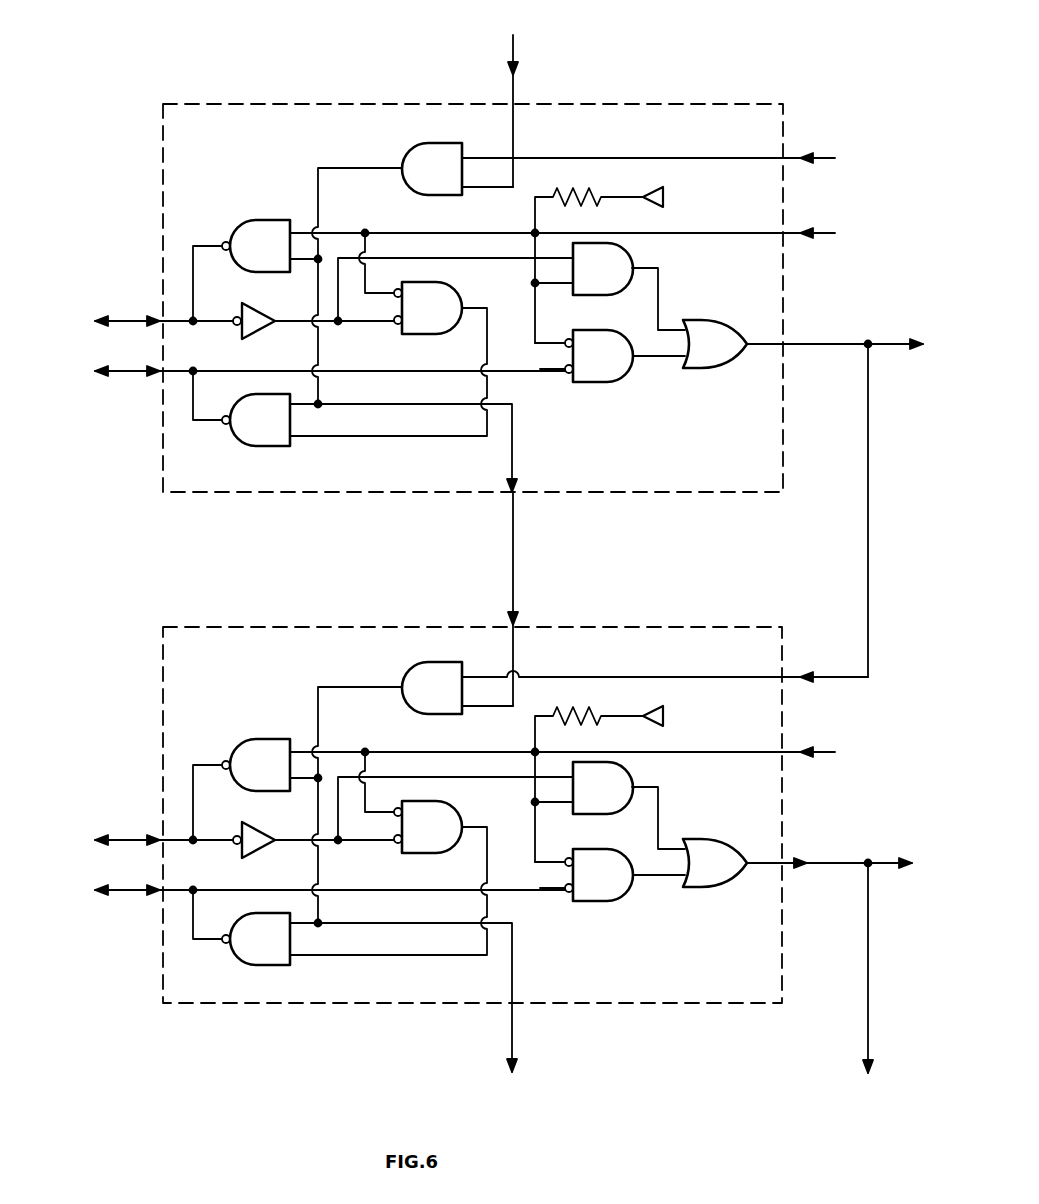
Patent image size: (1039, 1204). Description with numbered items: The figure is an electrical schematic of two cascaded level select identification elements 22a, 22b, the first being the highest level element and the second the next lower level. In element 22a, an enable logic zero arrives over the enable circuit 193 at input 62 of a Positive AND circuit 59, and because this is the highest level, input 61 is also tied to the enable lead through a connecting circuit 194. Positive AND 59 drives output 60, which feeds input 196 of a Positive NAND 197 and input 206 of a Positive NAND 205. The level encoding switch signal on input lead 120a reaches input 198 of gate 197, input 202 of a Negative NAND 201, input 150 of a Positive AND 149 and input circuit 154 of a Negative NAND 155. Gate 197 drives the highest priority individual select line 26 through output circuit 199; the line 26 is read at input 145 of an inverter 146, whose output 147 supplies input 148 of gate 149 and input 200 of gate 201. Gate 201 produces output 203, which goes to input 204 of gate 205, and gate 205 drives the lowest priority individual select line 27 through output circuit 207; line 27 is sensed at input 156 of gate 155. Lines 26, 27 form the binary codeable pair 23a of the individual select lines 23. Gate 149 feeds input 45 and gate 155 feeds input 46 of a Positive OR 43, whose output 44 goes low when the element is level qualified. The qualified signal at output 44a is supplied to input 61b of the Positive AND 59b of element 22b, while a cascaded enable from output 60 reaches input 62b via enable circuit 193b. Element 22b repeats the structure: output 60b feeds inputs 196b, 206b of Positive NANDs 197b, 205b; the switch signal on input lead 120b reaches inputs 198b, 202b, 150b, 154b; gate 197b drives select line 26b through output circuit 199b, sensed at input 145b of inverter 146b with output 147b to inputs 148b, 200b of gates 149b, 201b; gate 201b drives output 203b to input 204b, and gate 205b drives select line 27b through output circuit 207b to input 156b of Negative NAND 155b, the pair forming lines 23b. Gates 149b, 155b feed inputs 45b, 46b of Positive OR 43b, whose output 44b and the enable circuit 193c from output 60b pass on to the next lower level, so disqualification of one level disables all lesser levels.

The level select identification element 22a is at (846, 47).
The level select identification element 22b is at (507, 787).
The enable circuit 193 is at (513, 97).
The enable circuit 193b is at (527, 599).
The enable circuit 193c is at (551, 1048).
The connecting circuit 194 is at (815, 158).
The input lead 120a is at (832, 233).
The input lead 120b is at (850, 737).
The Positive AND circuit 59 is at (432, 169).
The Positive AND circuit 59b is at (432, 688).
The output 60 is at (386, 168).
The output 60b is at (357, 787).
The input 61 is at (488, 150).
The input 61b is at (665, 659).
The input 62 is at (490, 190).
The input 62b is at (488, 724).
The Positive NAND circuit 197 is at (256, 246).
The Positive NAND circuit 197b is at (256, 765).
The input 198 is at (305, 233).
The input 198b is at (525, 735).
The input 196 is at (305, 262).
The input 196b is at (288, 799).
The output circuit 199 is at (207, 246).
The output circuit 199b is at (208, 767).
The inverter 146 is at (256, 304).
The inverter 146b is at (235, 822).
The input 145 is at (222, 325).
The input 145b is at (201, 858).
The output 147 is at (299, 325).
The output 147b is at (299, 858).
The Negative NAND circuit 201 is at (428, 308).
The Negative NAND circuit 201b is at (428, 827).
The input 200 is at (357, 325).
The input 200b is at (455, 829).
The input 202 is at (380, 292).
The input 202b is at (416, 782).
The output 203 is at (482, 292).
The output 203b is at (388, 891).
The Positive NAND circuit 205 is at (256, 420).
The Positive NAND circuit 205b is at (256, 939).
The input 206 is at (312, 407).
The input 206b is at (403, 997).
The input 204 is at (300, 440).
The input 204b is at (331, 973).
The output circuit 207 is at (200, 425).
The output circuit 207b is at (229, 945).
The input 148 is at (553, 255).
The input 148b is at (622, 784).
The Positive AND circuit 149 is at (603, 269).
The Positive AND circuit 149b is at (603, 788).
The input 150 is at (556, 290).
The input 150b is at (583, 818).
The Negative NAND gate 155 is at (599, 356).
The Negative NAND circuit 155b is at (599, 875).
The input circuit 154 is at (554, 340).
The input 154b is at (529, 864).
The input 156 is at (560, 370).
The input 156b is at (570, 913).
The Positive OR circuit 43 is at (715, 344).
The Positive OR circuit 43b is at (715, 863).
The input 45 is at (673, 324).
The input 45b is at (683, 818).
The input 46 is at (648, 357).
The input 46b is at (669, 902).
The output 44 is at (759, 360).
The output 44a is at (876, 340).
The output 44b is at (829, 940).
The individual select lines 23 is at (122, 268).
The binary codeable pair of circuits 23a is at (140, 372).
The bidirectional line pair 23b is at (92, 865).
The highest priority individual select line 26 is at (118, 318).
The individual select line 26b is at (156, 825).
The lowest priority individual select line 27 is at (120, 375).
The individual select line 27b is at (320, 914).